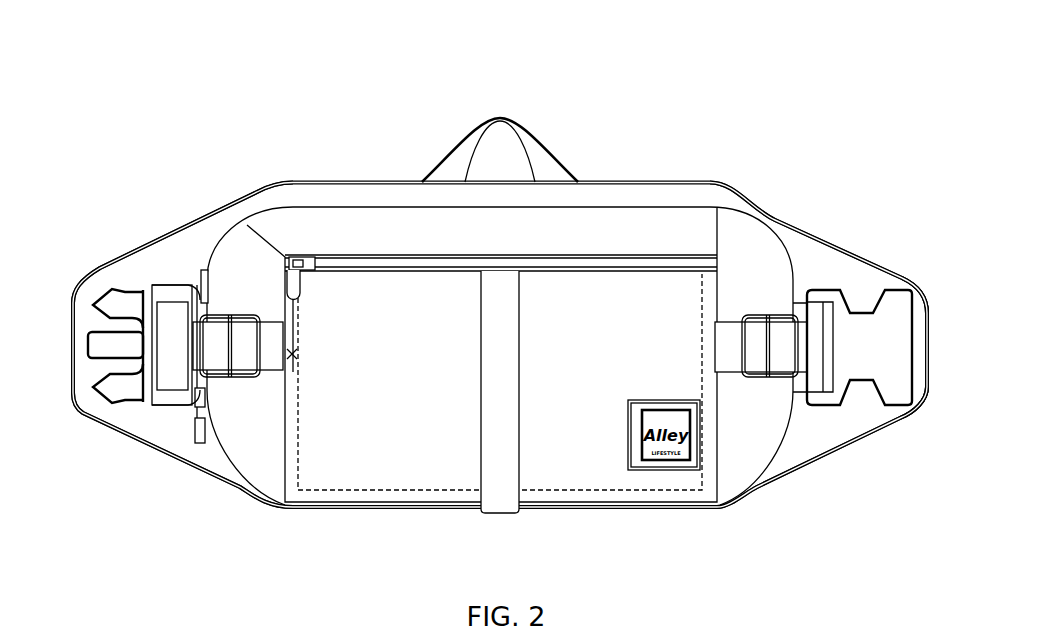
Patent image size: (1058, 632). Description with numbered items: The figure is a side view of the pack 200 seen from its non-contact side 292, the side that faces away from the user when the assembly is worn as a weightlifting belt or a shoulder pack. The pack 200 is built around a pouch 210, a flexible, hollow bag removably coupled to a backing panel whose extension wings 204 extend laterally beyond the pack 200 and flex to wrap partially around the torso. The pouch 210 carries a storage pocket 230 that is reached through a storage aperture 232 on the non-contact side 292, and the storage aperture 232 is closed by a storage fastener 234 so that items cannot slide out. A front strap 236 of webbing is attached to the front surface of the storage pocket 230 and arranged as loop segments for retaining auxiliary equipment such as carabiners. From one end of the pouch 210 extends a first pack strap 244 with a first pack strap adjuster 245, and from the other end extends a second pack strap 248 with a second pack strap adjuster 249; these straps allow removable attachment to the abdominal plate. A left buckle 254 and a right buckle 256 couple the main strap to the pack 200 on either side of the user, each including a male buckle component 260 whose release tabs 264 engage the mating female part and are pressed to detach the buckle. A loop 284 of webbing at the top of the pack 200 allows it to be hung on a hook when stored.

The pack 200 is at (126, 160).
The extension wings 204 is at (827, 232).
The pouch 210 is at (407, 225).
The storage pocket 230 is at (358, 490).
The storage aperture 232 is at (672, 258).
The storage fastener 234 is at (298, 257).
The front strap 236 is at (505, 477).
The first pack strap 244 is at (265, 357).
The first pack strap adjuster 245 is at (733, 362).
The second pack strap 248 is at (230, 317).
The second pack strap adjuster 249 is at (762, 317).
The left buckle 254 is at (175, 277).
The right buckle 256 is at (907, 280).
The male buckle component 260 is at (170, 402).
The release tabs 264 is at (107, 388).
The loop 284 is at (540, 155).
The non-contact side 292 is at (748, 518).